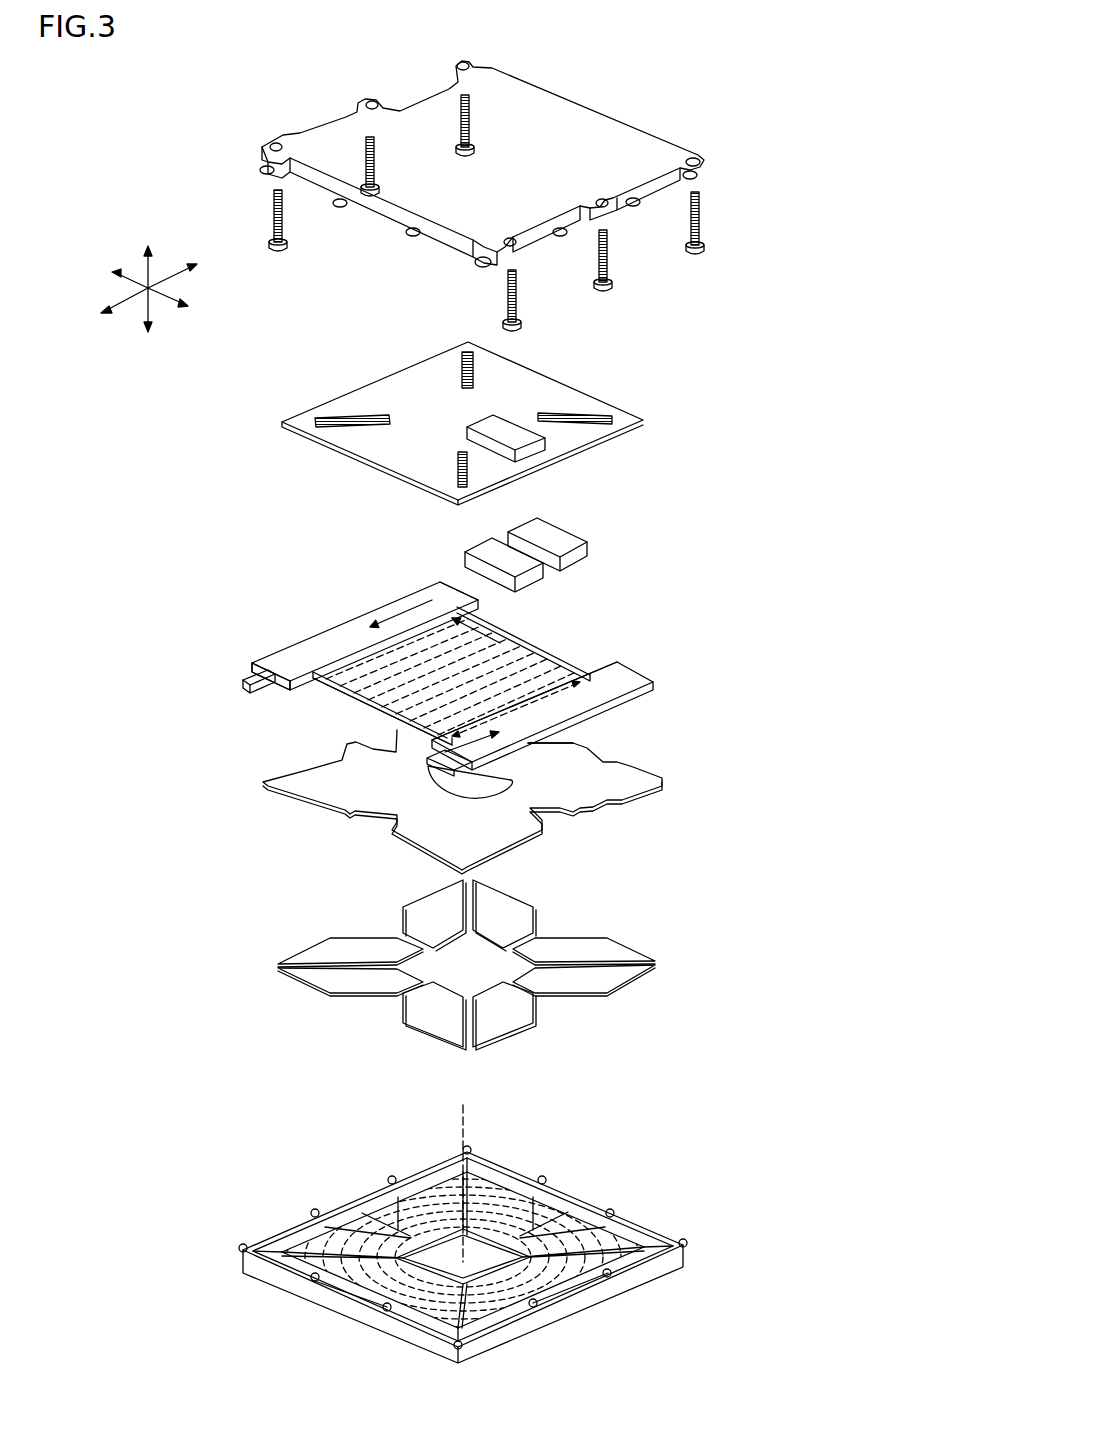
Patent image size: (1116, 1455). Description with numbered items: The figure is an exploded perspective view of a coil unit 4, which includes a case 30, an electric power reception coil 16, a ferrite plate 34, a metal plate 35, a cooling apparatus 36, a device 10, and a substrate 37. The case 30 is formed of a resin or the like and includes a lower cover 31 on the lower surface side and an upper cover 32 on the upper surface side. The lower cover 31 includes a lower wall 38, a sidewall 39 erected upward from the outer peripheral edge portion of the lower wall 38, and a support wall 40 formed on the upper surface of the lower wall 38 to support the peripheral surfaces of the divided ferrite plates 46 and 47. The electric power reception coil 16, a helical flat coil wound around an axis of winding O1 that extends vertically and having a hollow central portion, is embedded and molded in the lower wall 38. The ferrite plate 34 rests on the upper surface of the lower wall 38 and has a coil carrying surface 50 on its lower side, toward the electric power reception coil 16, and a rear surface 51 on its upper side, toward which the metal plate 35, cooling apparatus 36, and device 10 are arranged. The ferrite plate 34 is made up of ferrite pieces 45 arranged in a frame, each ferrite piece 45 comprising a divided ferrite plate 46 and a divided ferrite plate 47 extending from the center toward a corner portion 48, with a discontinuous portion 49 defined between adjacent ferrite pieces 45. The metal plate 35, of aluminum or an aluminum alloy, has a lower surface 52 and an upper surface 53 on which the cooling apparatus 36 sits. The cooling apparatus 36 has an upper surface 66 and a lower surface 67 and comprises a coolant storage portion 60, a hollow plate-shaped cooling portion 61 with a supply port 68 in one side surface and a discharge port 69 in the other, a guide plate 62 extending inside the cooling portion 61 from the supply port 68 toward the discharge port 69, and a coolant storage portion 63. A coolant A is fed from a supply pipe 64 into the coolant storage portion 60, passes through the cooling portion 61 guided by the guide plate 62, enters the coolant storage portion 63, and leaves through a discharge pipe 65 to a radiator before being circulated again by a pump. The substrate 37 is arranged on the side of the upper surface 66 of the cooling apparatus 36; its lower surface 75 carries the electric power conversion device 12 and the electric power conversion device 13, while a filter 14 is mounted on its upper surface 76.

The coil unit 4 is at (176, 86).
The case 30 is at (569, 712).
The upper cover 32 is at (705, 158).
The lower cover 31 is at (814, 1240).
The support wall 40 is at (687, 1246).
The sidewall 39 is at (593, 1297).
The lower wall 38 is at (557, 1327).
The electric power reception coil 16 is at (577, 1237).
The axis of winding O1 is at (467, 1198).
The substrate 37 is at (578, 398).
The upper surface 76 is at (327, 408).
The lower surface 75 is at (333, 448).
The device 10 is at (755, 431).
The filter 14 is at (535, 448).
The electric power conversion device 13 is at (570, 537).
The electric power conversion device 12 is at (538, 577).
The cooling apparatus 36 is at (760, 593).
The coolant A is at (395, 602).
The upper surface 66 is at (337, 629).
The coolant storage portion 63 is at (472, 603).
The discharge port 69 is at (347, 653).
The discharge pipe 65 is at (243, 681).
The cooling portion 61 is at (547, 672).
The guide plate 62 is at (556, 648).
The coolant storage portion 60 is at (600, 705).
The lower surface 67 is at (363, 708).
The supply port 68 is at (490, 726).
The supply pipe 64 is at (427, 766).
The metal plate 35 is at (760, 748).
The lower surface 52 is at (637, 786).
The upper surface 53 is at (595, 760).
The ferrite plate 34 is at (757, 920).
The ferrite piece 45 is at (388, 870).
The divided ferrite plate 46 is at (568, 948).
The divided ferrite plate 47 is at (605, 977).
The corner portion 48 is at (278, 963).
The discontinuous portion 49 is at (352, 992).
The rear surface 51 is at (516, 1010).
The coil carrying surface 50 is at (518, 1025).